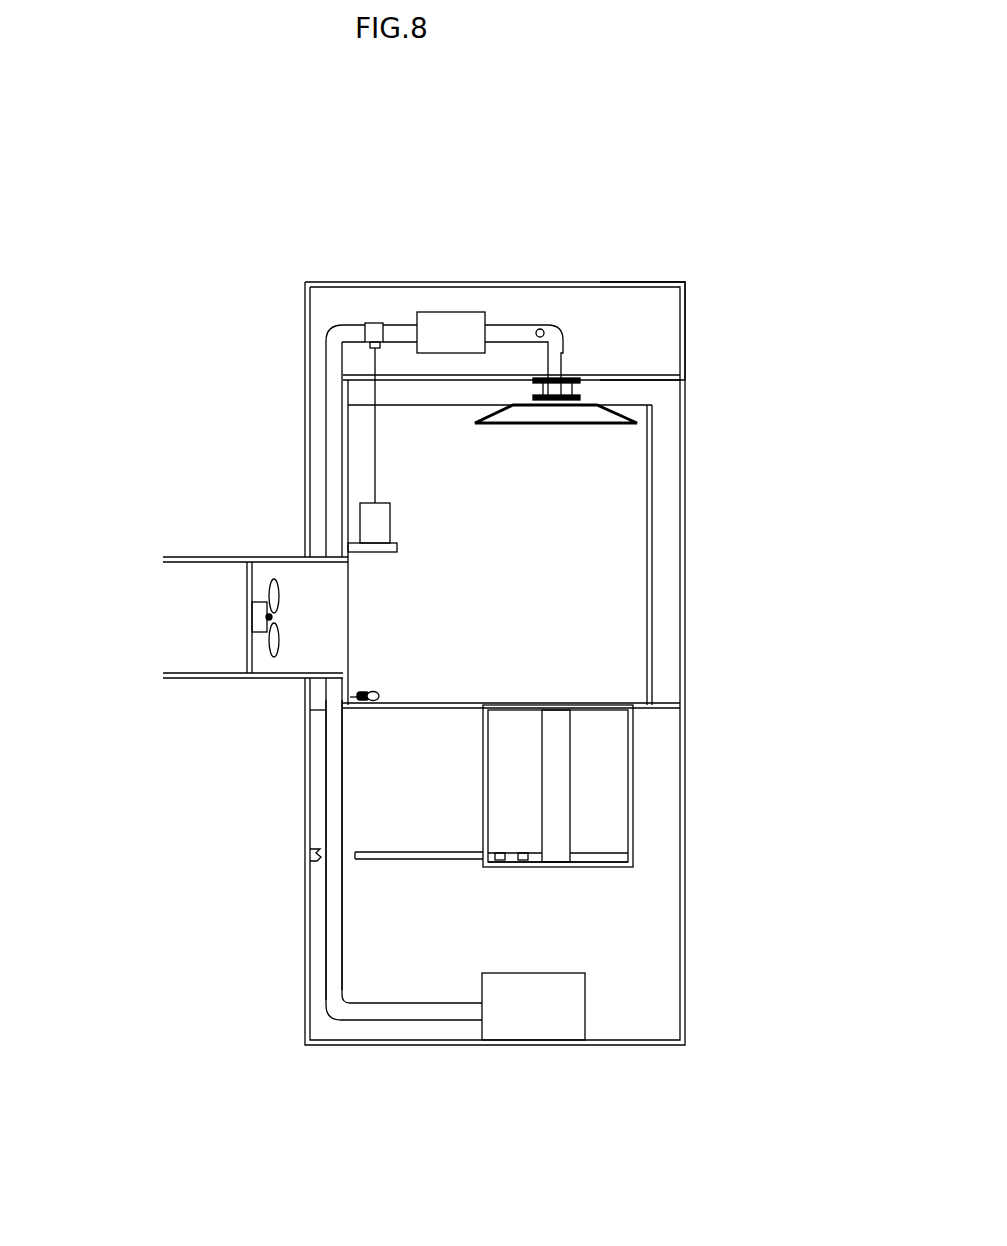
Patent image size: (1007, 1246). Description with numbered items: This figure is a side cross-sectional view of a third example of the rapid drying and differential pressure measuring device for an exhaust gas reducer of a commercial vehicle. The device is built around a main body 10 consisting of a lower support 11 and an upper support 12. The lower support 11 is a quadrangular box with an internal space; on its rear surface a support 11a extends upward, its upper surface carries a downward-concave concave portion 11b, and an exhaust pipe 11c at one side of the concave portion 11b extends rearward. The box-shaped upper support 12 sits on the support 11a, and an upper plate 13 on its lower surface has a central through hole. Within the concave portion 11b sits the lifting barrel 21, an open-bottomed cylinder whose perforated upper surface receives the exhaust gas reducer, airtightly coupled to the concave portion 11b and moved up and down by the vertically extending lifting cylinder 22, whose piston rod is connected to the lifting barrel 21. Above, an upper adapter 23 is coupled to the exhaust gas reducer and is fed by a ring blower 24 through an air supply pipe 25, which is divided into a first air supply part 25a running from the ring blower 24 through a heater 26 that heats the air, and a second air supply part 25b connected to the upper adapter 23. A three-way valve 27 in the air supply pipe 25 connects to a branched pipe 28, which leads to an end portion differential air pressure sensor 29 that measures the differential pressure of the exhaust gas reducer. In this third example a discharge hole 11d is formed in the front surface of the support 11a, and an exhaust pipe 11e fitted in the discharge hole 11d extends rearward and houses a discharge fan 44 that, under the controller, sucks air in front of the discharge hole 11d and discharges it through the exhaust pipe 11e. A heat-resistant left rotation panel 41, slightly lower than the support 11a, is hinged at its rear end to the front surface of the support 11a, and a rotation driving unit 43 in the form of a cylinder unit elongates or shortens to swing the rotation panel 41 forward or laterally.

The main body 10 is at (256, 318).
The lower support 11 is at (688, 913).
The support 11a is at (303, 726).
The concave portion 11b is at (598, 860).
The exhaust pipe 11c is at (378, 850).
The discharge hole 11d is at (343, 666).
The exhaust pipe 11e is at (185, 557).
The upper support 12 is at (577, 282).
The upper plate 13 is at (662, 382).
The lifting barrel 21 is at (628, 790).
The lifting cylinder 22 is at (570, 757).
The upper adapter 23 is at (648, 408).
The ring blower 24 is at (585, 1017).
The air supply pipe 25 is at (310, 782).
The first air supply part 25a is at (325, 905).
The second air supply part 25b is at (513, 325).
The heater 26 is at (450, 312).
The 3-way valve 27 is at (375, 322).
The branched pipe 28 is at (372, 411).
The end portion differential air pressure sensor 29 is at (368, 503).
The left rotation panel 41 is at (652, 605).
The rotation driving unit 43 is at (370, 690).
The discharge fan 44 is at (265, 600).